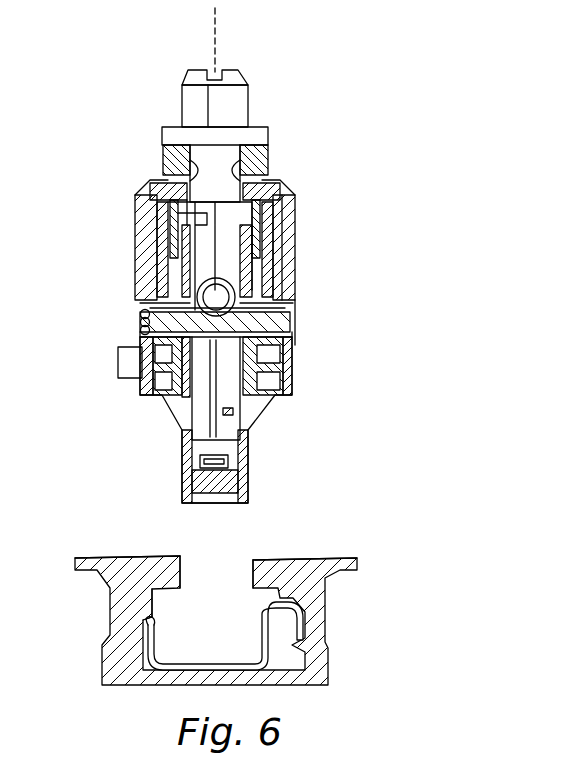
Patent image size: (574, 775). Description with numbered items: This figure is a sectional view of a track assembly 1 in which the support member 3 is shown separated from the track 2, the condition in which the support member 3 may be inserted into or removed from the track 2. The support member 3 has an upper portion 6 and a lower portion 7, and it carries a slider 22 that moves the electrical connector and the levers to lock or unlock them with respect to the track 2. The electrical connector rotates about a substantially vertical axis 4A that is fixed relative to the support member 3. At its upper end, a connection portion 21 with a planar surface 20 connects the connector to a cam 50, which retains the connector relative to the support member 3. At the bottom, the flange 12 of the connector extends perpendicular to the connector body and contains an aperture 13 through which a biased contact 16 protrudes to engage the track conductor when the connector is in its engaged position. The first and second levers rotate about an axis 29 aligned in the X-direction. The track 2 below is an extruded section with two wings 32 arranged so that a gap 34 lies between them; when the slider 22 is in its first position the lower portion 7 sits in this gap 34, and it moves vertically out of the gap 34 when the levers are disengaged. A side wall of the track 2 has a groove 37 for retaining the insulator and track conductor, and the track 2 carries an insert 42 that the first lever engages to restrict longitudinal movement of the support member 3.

The track assembly 1 is at (385, 104).
The axis of the electrical connector 4A is at (212, 28).
The upper portion 6 is at (72, 72).
The lower portion 7 is at (72, 380).
The connection portion 21 is at (238, 76).
The cam 50 is at (232, 102).
The planar surface 20 is at (176, 157).
The slider 22 is at (272, 166).
The support member 3 is at (299, 221).
The axis 29 is at (272, 297).
The aperture 13 is at (250, 445).
The contact 16 is at (234, 466).
The flange 12 is at (202, 471).
The track 2 is at (328, 625).
The wings 32 is at (132, 556).
The gap 34 is at (211, 572).
The groove 37 is at (142, 605).
The insert 42 is at (167, 644).